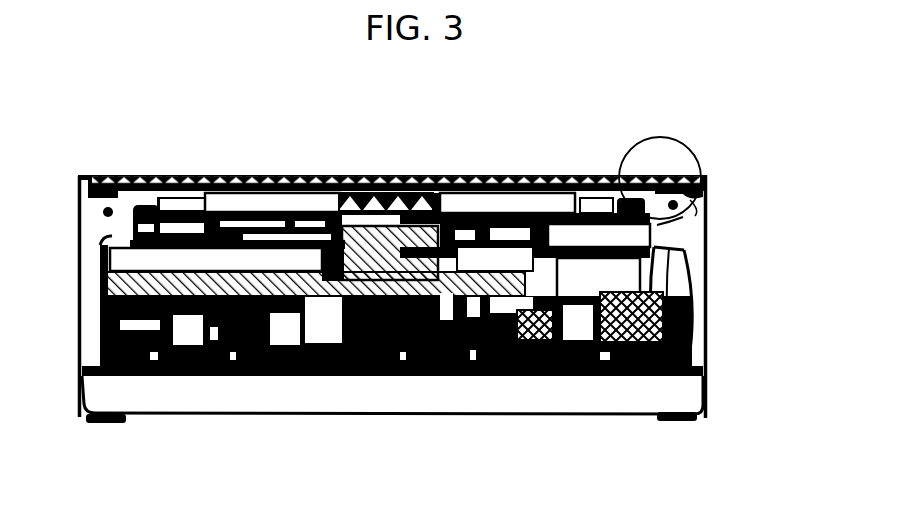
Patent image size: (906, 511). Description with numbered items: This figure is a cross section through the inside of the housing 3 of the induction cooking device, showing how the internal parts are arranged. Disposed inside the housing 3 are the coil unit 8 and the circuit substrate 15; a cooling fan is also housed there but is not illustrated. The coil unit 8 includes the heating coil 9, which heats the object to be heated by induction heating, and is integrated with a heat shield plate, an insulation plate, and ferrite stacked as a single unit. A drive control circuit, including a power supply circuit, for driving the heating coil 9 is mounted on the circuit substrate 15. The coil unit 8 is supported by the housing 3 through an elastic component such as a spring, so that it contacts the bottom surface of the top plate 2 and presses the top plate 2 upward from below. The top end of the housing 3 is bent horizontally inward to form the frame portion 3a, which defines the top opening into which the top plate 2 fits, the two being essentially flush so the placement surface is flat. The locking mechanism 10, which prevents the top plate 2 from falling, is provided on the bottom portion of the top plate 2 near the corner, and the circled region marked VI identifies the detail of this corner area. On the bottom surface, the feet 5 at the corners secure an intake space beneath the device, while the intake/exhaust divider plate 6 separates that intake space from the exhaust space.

The top plate 2 is at (528, 176).
The housing 3 is at (708, 290).
The frame portion 3a is at (80, 176).
The feet 5 is at (87, 423).
The intake/exhaust divider plate 6 is at (515, 398).
The coil unit 8 is at (300, 176).
The heating coil 9 is at (262, 176).
The locking mechanism 10 is at (705, 193).
The circuit substrate 15 is at (350, 378).
The detail view VI is at (660, 137).